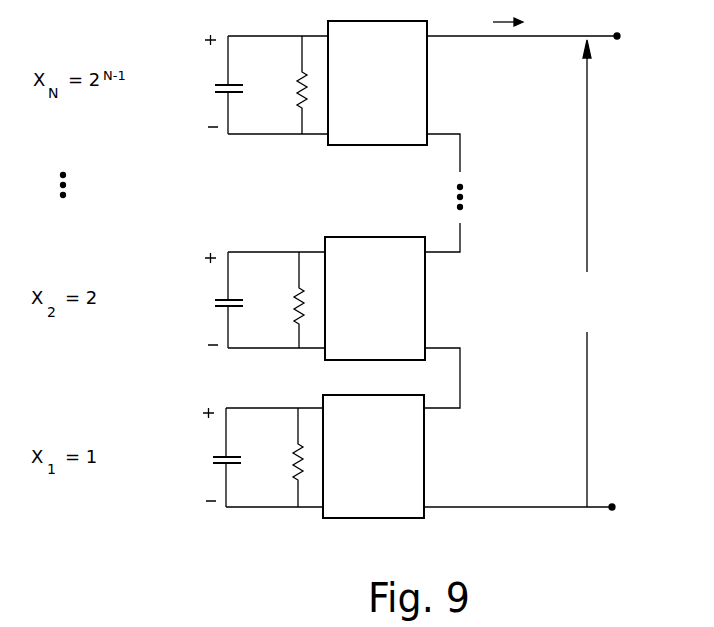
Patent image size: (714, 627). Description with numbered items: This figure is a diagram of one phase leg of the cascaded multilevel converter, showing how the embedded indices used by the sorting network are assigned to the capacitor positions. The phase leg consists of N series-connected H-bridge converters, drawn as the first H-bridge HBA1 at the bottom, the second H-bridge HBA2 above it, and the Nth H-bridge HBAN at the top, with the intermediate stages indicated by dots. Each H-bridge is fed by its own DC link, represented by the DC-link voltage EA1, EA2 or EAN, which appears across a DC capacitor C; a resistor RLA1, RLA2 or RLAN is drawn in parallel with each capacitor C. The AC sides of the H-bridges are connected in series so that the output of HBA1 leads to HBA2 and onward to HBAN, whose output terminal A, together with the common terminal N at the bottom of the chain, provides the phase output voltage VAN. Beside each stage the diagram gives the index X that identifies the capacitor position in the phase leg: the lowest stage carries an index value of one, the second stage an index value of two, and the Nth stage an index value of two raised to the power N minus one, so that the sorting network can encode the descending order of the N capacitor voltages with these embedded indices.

The Nth H-bridge converter HBAN is at (377, 83).
The second H-bridge converter HBA2 is at (375, 298).
The first H-bridge converter HBA1 is at (373, 456).
The Nth DC-link voltage EAN is at (247, 84).
The second DC-link voltage EA2 is at (245, 300).
The first DC-link voltage EA1 is at (244, 457).
The load resistor RLAN is at (272, 85).
The load resistor RLA2 is at (269, 300).
The load resistor RLA1 is at (268, 457).
The DC capacitor C is at (238, 277).
The output terminal A is at (536, 23).
The number of H-bridge converters per phase N is at (533, 507).
The phase voltage VAN is at (592, 273).